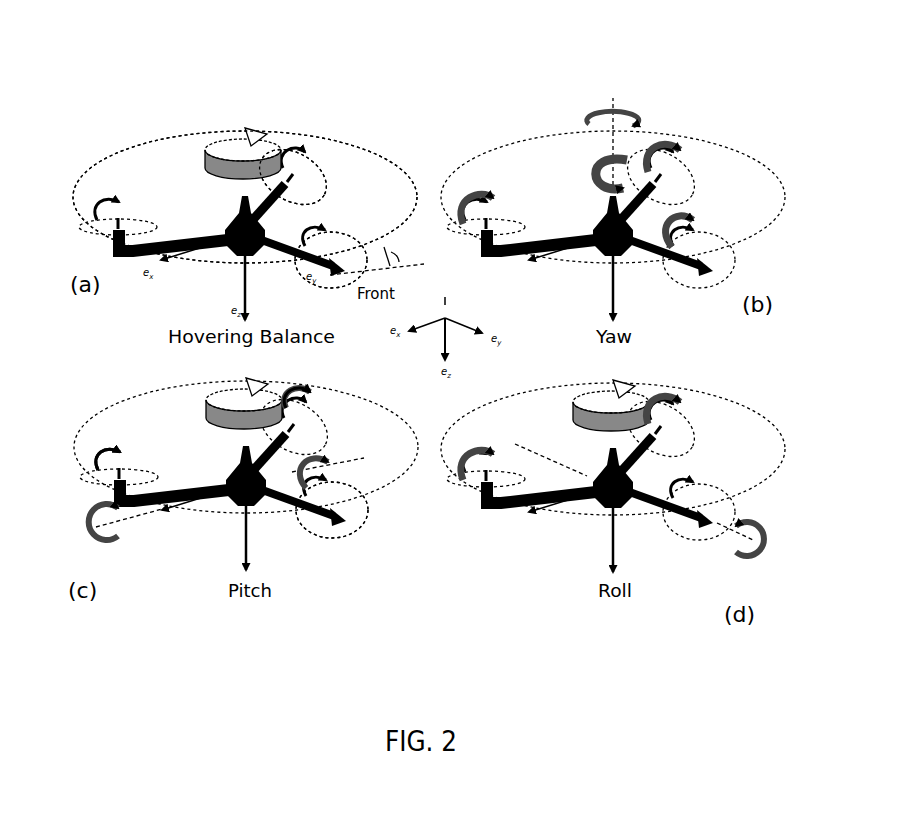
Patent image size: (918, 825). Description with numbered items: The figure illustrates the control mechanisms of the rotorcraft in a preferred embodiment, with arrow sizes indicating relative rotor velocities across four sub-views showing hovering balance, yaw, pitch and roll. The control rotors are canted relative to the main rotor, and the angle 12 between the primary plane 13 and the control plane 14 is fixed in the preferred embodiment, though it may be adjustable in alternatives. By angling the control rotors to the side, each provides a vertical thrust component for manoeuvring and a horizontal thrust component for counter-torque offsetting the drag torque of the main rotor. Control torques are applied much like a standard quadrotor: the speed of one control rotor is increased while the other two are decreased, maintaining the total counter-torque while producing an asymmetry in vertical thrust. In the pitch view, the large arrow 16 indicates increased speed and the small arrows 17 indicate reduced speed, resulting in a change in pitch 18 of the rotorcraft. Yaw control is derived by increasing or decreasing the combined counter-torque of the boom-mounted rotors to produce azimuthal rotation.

The angle 12 is at (386, 252).
The primary plane 13 is at (134, 162).
The control plane 14 is at (345, 238).
The large arrow 16 is at (320, 496).
The small arrows 17 is at (114, 452).
The change in pitch 18 is at (120, 537).